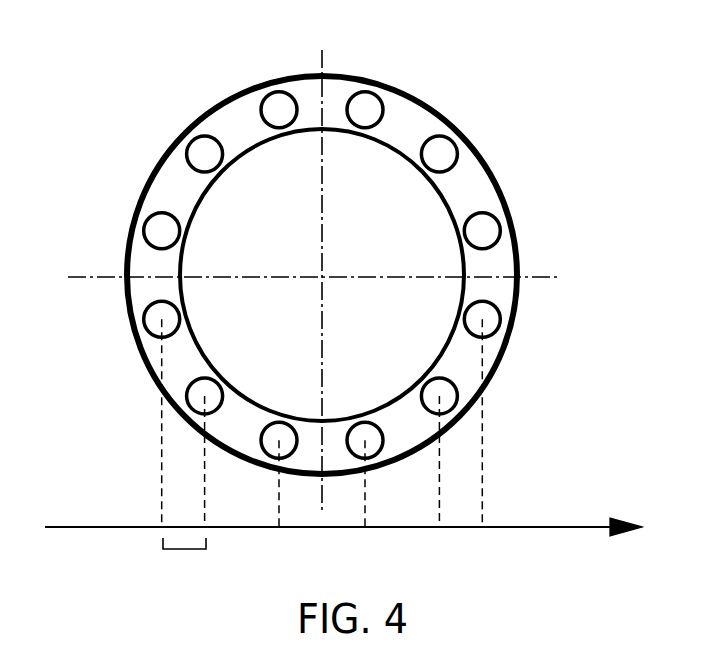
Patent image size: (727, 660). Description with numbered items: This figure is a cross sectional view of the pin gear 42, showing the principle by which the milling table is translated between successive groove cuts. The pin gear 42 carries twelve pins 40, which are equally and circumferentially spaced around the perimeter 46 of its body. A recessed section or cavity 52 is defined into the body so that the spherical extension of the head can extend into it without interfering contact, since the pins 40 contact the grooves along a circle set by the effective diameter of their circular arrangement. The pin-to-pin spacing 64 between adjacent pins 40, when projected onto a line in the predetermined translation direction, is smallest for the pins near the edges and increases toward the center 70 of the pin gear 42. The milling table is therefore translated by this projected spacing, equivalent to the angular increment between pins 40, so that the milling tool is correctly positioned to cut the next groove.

The pins 40 is at (148, 217).
The pin gear 42 is at (315, 255).
The perimeter 46 is at (497, 173).
The cavity 52 is at (398, 145).
The pin-to-pin spacing 64 is at (180, 549).
The center 70 is at (428, 542).